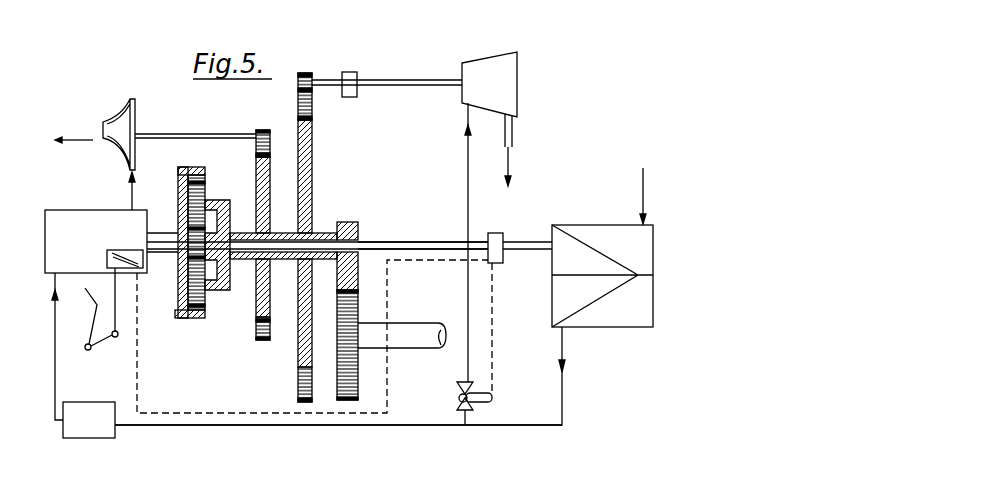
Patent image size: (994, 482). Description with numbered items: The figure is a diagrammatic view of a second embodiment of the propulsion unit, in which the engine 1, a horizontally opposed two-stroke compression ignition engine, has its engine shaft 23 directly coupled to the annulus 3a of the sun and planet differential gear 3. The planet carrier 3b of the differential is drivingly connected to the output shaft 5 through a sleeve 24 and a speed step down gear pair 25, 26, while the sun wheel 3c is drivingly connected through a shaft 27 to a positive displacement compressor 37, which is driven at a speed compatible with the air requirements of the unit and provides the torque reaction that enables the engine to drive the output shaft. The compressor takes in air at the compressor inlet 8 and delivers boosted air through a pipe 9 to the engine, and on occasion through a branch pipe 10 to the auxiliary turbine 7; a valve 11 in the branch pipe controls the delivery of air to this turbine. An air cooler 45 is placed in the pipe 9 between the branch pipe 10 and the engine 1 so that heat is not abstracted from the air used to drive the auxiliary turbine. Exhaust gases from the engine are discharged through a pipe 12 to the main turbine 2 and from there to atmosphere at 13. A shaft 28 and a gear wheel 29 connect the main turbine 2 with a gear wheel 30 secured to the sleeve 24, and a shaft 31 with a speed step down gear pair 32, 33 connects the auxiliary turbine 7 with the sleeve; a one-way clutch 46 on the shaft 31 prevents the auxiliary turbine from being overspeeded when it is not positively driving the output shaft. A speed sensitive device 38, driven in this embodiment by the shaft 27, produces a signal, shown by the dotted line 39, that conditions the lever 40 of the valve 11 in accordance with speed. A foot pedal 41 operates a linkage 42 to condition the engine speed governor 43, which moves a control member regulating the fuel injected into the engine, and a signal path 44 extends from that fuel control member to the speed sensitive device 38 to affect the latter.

The engine 1 is at (72, 218).
The main turbine 2 is at (132, 100).
The sun and planet differential gear 3 is at (190, 258).
The annulus 3a is at (180, 170).
The planet carrier 3b is at (206, 183).
The sun wheel 3c is at (190, 233).
The output shaft 5 is at (420, 330).
The auxiliary turbine 7 is at (495, 67).
The compressor inlet 8 is at (643, 171).
The pipe 9 is at (203, 425).
The branch pipe 10 is at (466, 165).
The valve 11 is at (457, 410).
The pipe 12 is at (129, 197).
The discharge to atmosphere 13 is at (74, 127).
The engine shaft 23 is at (158, 252).
The sleeve 24 is at (283, 233).
The speed step down gear 25 is at (360, 236).
The speed step down gear 26 is at (358, 310).
The shaft 27 is at (443, 243).
The shaft 28 is at (182, 133).
The gear wheel 29 is at (268, 130).
The gear wheel 30 is at (271, 177).
The auxiliary turbine shaft 31 is at (417, 85).
The speed step down gear 32 is at (308, 72).
The speed step down gear 33 is at (312, 145).
The positive displacement compressor 37 is at (578, 230).
The speed sensitive device 38 is at (503, 238).
The signal 39 is at (496, 325).
The lever 40 is at (483, 402).
The foot pedal 41 is at (83, 307).
The linkage 42 is at (102, 341).
The engine speed governor 43 is at (137, 253).
The signal path 44 is at (225, 410).
The air cooler 45 is at (110, 435).
The one-way clutch 46 is at (357, 75).